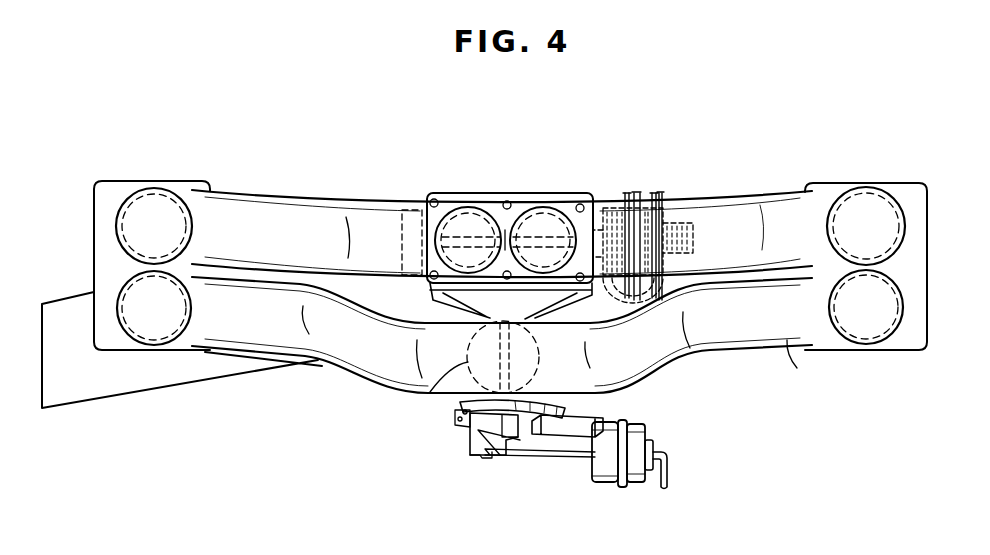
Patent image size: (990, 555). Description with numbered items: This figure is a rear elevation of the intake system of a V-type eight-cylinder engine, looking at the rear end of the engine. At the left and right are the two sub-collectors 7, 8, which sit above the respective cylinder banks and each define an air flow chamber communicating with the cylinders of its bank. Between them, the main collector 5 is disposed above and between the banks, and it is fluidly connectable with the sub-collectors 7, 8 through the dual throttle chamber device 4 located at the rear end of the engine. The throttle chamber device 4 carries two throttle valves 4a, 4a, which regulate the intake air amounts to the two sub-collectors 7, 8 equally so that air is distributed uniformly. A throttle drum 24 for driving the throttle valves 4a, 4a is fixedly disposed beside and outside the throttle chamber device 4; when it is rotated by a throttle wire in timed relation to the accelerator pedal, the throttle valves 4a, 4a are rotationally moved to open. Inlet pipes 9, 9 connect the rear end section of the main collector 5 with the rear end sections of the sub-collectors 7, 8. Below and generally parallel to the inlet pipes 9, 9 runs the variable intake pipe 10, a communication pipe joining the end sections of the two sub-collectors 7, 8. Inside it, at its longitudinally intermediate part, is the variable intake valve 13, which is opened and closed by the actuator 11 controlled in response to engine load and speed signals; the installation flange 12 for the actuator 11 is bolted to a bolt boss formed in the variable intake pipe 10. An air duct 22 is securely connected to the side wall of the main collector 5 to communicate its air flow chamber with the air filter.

The throttle chamber device 4 is at (493, 200).
The throttle valves 4a is at (464, 218).
The main collector 5 is at (534, 298).
The sub-collector 7 is at (121, 187).
The sub-collector 8 is at (915, 226).
The inlet pipes 9 is at (773, 202).
The variable intake pipe 10 is at (787, 343).
The actuator 11 is at (630, 483).
The installation flange 12 is at (452, 415).
The variable intake valve 13 is at (440, 388).
The air duct 22 is at (152, 373).
The throttle drum 24 is at (659, 192).